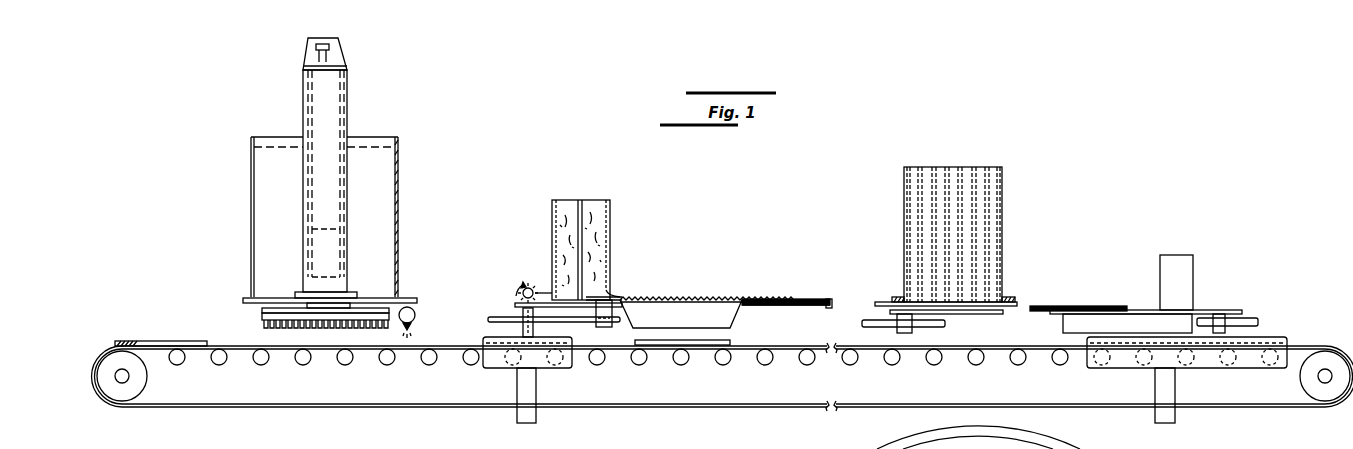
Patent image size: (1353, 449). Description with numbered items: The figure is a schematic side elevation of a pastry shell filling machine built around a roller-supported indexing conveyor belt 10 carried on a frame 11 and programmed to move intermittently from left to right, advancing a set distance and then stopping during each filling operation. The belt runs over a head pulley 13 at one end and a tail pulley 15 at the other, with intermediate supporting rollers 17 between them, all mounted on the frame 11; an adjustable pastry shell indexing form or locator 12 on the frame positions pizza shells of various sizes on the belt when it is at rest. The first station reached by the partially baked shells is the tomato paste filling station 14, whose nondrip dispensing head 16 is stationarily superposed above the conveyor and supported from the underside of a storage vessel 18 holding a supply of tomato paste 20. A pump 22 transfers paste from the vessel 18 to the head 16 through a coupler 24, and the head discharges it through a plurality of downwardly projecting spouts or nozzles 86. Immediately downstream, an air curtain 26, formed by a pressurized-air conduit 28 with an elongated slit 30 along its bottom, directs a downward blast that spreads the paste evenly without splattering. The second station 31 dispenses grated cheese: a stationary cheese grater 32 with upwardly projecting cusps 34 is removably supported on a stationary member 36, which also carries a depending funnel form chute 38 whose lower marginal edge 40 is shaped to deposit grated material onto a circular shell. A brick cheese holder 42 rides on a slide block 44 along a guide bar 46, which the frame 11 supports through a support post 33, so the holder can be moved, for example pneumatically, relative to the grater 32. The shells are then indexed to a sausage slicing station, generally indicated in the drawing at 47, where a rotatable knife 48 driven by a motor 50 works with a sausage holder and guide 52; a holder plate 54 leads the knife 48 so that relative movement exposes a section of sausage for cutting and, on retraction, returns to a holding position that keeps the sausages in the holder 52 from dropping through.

The indexing conveyor belt 10 is at (330, 407).
The frame 11 is at (497, 366).
The pastry shell indexing form or locator 12 is at (158, 342).
The head pulley 13 is at (105, 372).
The tomato paste filling station 14 is at (238, 312).
The tail pulley 15 is at (1332, 393).
The dispensing head 16 is at (262, 316).
The intermediate supporting rollers 17 is at (852, 362).
The storage vessel 18 is at (398, 234).
The tomato paste 20 is at (342, 184).
The pump 22 is at (348, 111).
The coupler 24 is at (312, 306).
The air curtain 26 is at (411, 309).
The conduit 28 is at (415, 316).
The elongated slit 30 is at (413, 324).
The second station 31 is at (546, 251).
The cheese grater 32 is at (741, 299).
The support post 33 is at (535, 332).
The cusps 34 is at (660, 299).
The stationary member 36 is at (796, 307).
The funnel form chute 38 is at (740, 318).
The lower marginal edge 40 is at (728, 342).
The brick cheese holder 42 is at (610, 236).
The slide block 44 is at (610, 330).
The guide bar 46 is at (500, 317).
The stacking station 47 is at (893, 243).
The rotatable knife 48 is at (1080, 306).
The motor 50 is at (1194, 265).
The sausage holder and guide 52 is at (1004, 224).
The holder plate 54 is at (985, 315).
The spouts or nozzles 86 is at (382, 330).